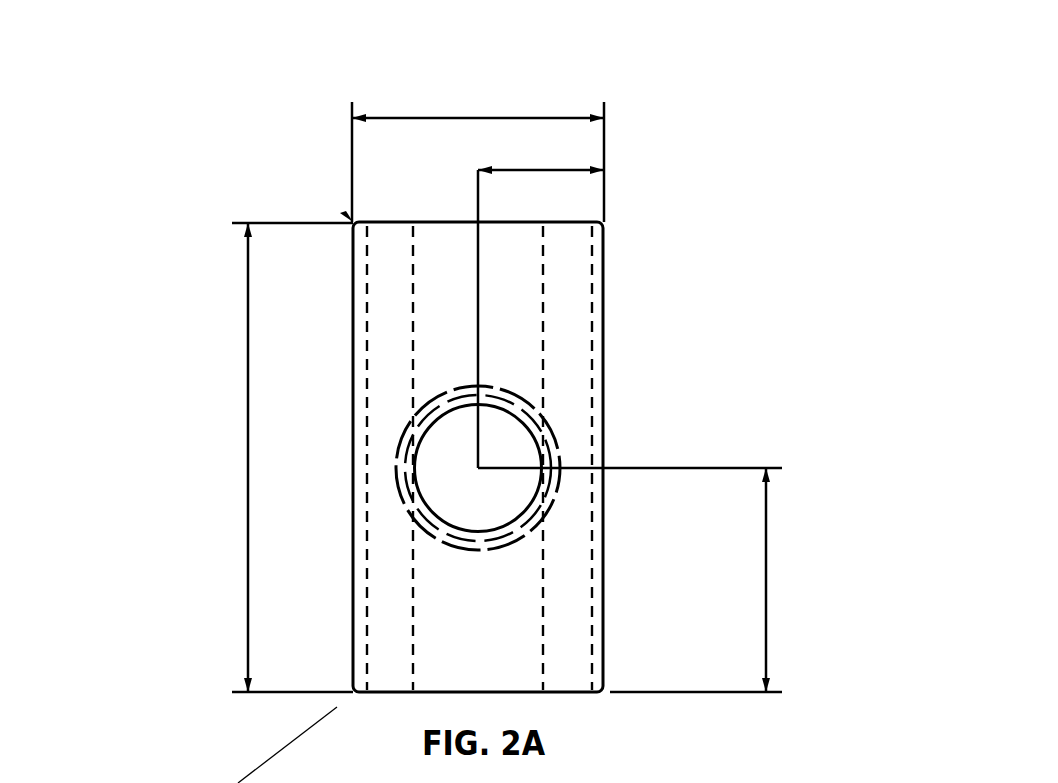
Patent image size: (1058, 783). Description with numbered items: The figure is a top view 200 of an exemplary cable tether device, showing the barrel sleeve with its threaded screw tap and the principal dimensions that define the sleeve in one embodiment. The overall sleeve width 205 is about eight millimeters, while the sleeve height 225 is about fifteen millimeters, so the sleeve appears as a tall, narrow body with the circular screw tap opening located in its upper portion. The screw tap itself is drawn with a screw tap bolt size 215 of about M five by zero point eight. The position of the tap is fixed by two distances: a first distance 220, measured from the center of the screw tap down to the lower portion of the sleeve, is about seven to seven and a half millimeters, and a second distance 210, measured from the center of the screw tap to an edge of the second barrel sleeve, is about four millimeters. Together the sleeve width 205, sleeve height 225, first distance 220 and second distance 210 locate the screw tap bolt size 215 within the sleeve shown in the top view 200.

The top view 200 is at (187, 85).
The sleeve width 205 is at (478, 148).
The second distance 210 is at (541, 303).
The screw tap bolt size 215 is at (663, 406).
The first distance 220 is at (630, 580).
The sleeve height 225 is at (279, 451).